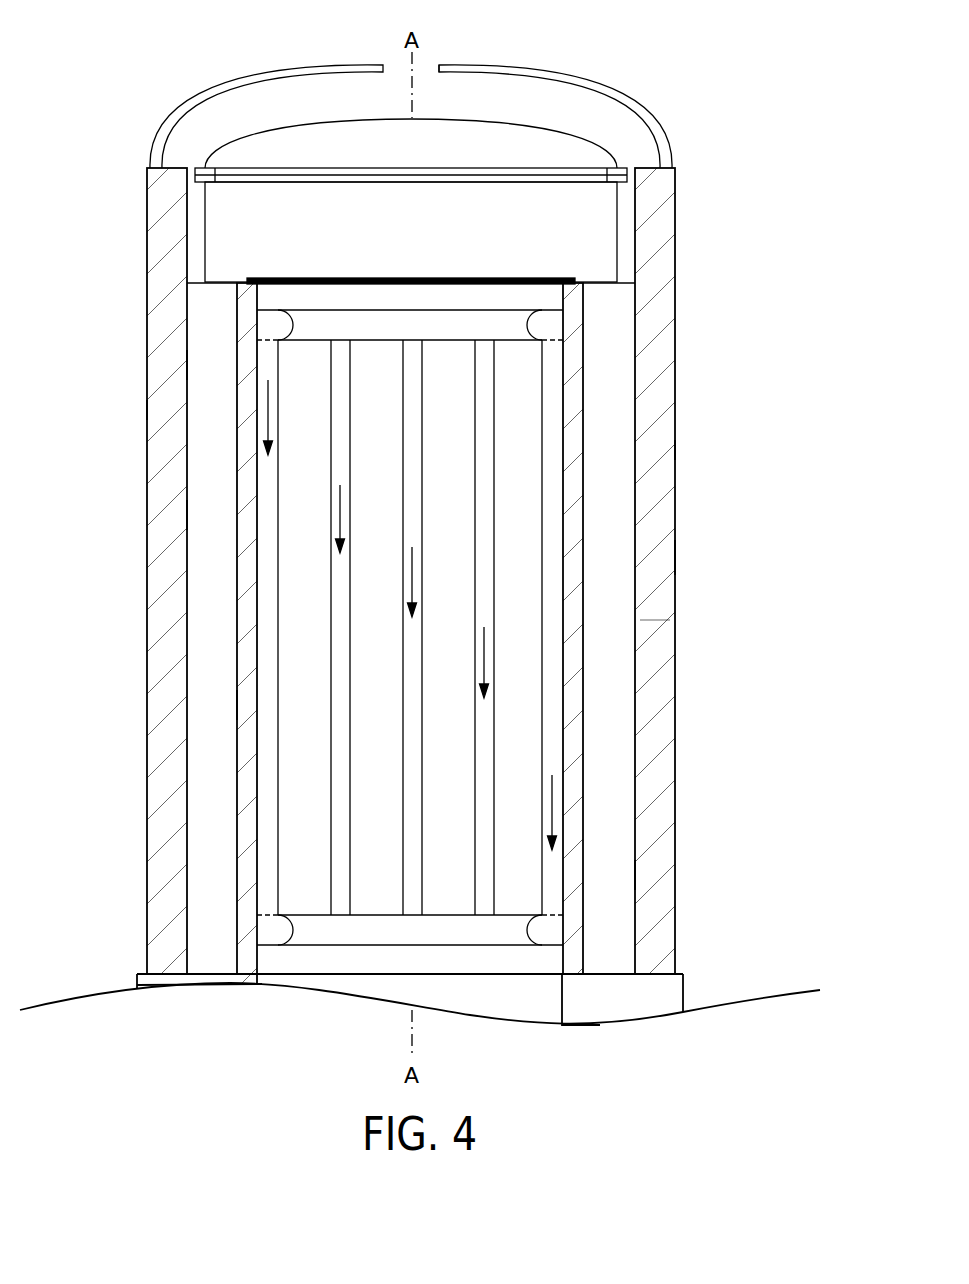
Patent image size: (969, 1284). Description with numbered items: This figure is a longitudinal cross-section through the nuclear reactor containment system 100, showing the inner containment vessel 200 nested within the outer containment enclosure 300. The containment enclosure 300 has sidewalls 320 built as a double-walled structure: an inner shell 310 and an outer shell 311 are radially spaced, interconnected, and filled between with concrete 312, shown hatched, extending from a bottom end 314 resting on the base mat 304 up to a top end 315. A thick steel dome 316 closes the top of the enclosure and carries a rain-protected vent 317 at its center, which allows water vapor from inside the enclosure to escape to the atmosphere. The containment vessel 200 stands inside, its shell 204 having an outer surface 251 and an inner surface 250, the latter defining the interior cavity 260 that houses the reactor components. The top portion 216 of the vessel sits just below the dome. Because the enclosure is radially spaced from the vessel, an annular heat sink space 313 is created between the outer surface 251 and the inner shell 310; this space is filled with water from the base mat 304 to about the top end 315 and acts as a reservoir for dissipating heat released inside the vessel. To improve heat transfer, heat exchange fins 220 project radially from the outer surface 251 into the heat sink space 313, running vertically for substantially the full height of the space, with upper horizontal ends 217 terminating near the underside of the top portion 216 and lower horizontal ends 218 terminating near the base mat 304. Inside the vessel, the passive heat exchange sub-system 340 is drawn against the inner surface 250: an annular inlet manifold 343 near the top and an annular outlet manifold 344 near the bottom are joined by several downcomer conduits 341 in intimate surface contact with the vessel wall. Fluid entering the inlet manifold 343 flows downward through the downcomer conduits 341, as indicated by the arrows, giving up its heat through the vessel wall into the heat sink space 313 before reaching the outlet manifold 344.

The nuclear reactor containment system 100 is at (160, 48).
The containment vessel 200 is at (250, 670).
The shell 204 is at (243, 708).
The top portion 216 is at (248, 225).
The upper horizontal ends 217 is at (195, 282).
The lower horizontal ends 218 is at (205, 985).
The heat exchange fins 220 is at (213, 365).
The inner surface 250 is at (575, 747).
The outer surface 251 is at (583, 435).
The interior cavity 260 is at (525, 410).
The containment enclosure 300 is at (120, 408).
The base mat 304 is at (572, 1002).
The inner shell 310 is at (635, 495).
The outer shell 311 is at (676, 557).
The concrete 312 is at (653, 632).
The heat sink space 313 is at (210, 528).
The bottom end 314 is at (648, 975).
The top end 315 is at (642, 148).
The steel dome 316 is at (578, 83).
The rain-protected vent 317 is at (445, 52).
The sidewalls 320 is at (685, 445).
The passive heat exchange sub-system 340 is at (315, 627).
The downcomer conduits 341 is at (542, 568).
The inlet manifold 343 is at (437, 337).
The outlet manifold 344 is at (437, 942).